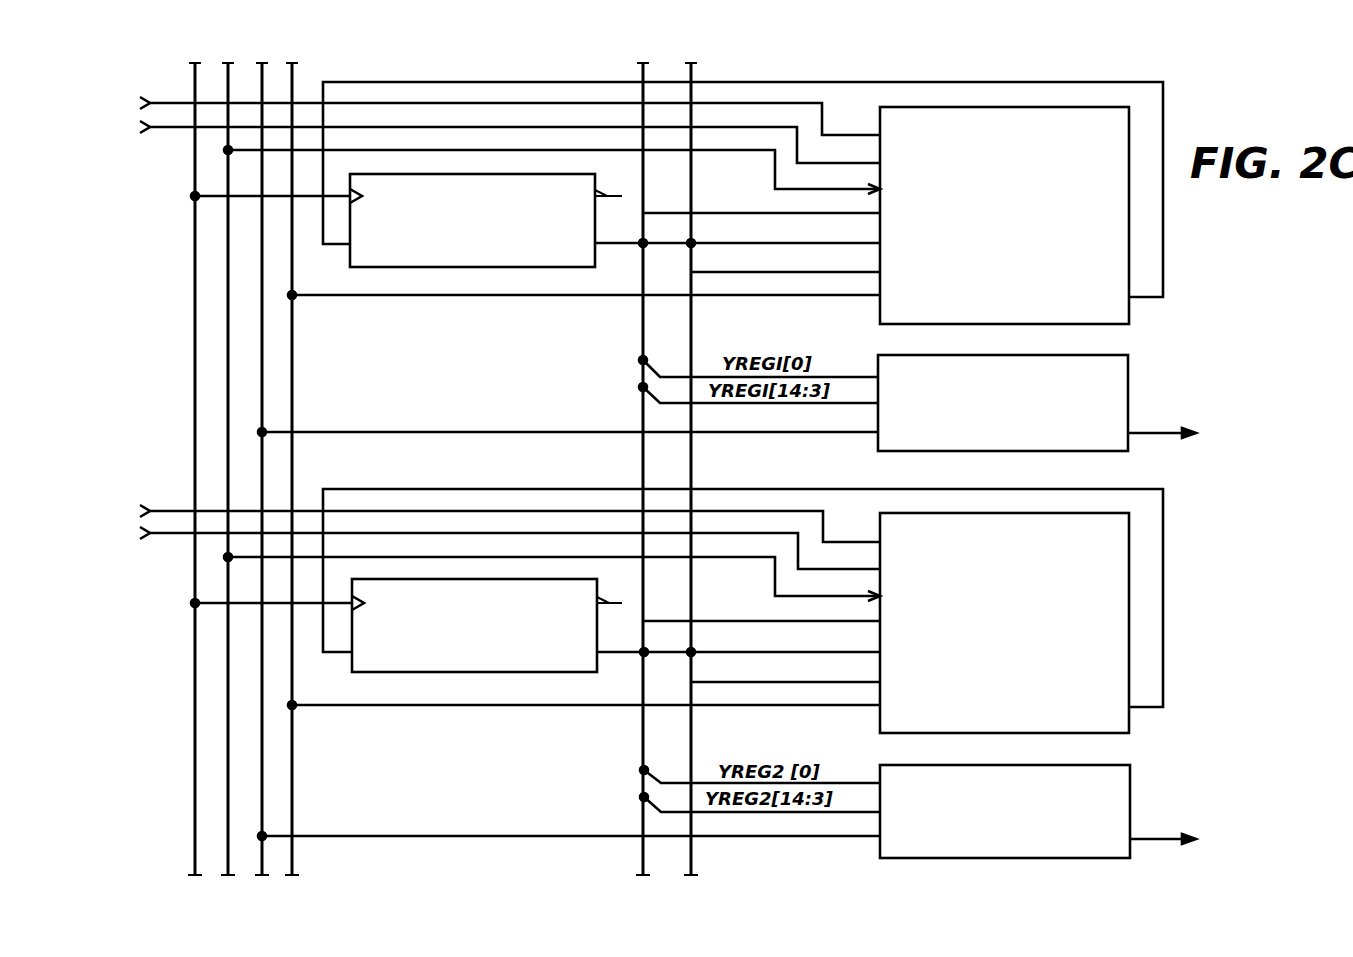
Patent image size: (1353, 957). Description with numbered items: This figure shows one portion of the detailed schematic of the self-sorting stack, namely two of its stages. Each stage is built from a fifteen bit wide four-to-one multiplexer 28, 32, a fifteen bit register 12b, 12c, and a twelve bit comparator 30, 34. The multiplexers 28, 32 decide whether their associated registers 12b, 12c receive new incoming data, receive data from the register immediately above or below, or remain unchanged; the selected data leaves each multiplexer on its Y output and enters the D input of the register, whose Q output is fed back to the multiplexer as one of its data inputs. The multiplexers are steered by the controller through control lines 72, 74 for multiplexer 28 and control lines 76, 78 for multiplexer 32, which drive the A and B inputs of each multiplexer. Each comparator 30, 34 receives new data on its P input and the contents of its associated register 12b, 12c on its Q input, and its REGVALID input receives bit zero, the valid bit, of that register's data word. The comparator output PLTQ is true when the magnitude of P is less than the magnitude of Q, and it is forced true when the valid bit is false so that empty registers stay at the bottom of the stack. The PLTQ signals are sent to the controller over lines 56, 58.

The control line 72 is at (163, 102).
The control line 74 is at (170, 128).
The control line 76 is at (163, 510).
The control line 78 is at (170, 535).
The fifteen bit register 12b is at (410, 268).
The fifteen bit register 12c is at (410, 673).
The fifteen bit wide four-to-one multiplexer 28 is at (1115, 258).
The fifteen bit wide four-to-one multiplexer 32 is at (1120, 568).
The twelve bit comparator 30 is at (1122, 372).
The twelve bit comparator 34 is at (1125, 787).
The line 56 is at (1160, 432).
The line 58 is at (1160, 838).